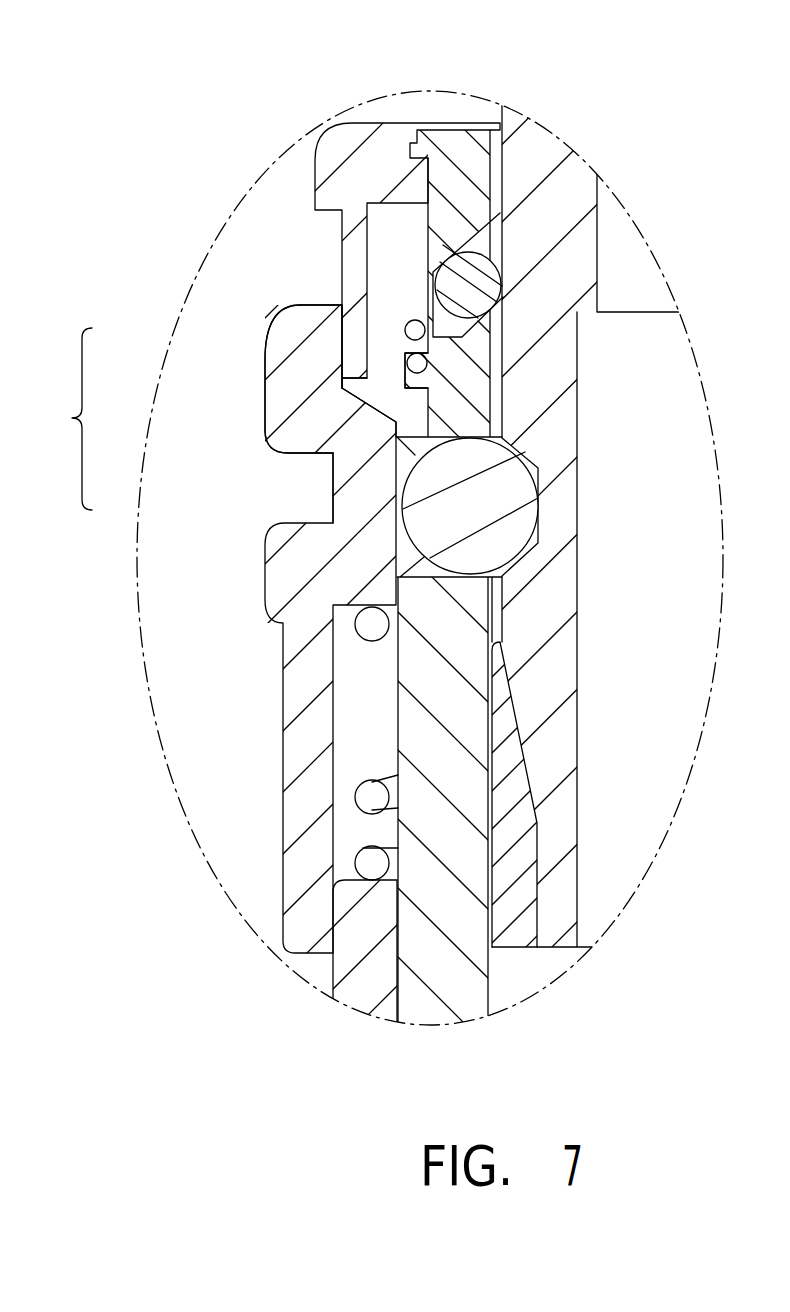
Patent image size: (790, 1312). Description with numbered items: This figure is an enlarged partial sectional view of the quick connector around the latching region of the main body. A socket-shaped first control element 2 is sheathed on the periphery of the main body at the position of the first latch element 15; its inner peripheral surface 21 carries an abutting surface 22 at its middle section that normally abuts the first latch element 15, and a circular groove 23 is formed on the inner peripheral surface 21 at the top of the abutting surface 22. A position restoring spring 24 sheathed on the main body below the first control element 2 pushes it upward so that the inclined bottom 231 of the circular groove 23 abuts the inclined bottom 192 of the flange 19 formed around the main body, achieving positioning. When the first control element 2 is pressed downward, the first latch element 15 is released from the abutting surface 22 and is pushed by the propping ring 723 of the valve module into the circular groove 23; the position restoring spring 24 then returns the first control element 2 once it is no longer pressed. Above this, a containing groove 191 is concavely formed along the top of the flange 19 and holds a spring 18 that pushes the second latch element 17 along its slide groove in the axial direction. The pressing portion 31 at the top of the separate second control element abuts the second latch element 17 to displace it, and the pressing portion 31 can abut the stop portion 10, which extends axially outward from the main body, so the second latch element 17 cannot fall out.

The first control element 2 is at (287, 577).
The stop portion 10 is at (436, 146).
The first latch element 15 is at (425, 537).
The second latch element 17 is at (458, 280).
The spring 18 is at (418, 325).
The flange 19 is at (380, 378).
The inner peripheral surface 21 is at (65, 419).
The abutting surface 22 is at (398, 488).
The circular groove 23 is at (347, 345).
The position restoring spring 24 is at (370, 795).
The pressing portion 31 is at (371, 145).
The containing groove 191 is at (347, 303).
The bottom of the flange 192 is at (333, 457).
The bottom of the circular groove 231 is at (357, 393).
The propping ring 723 is at (517, 875).